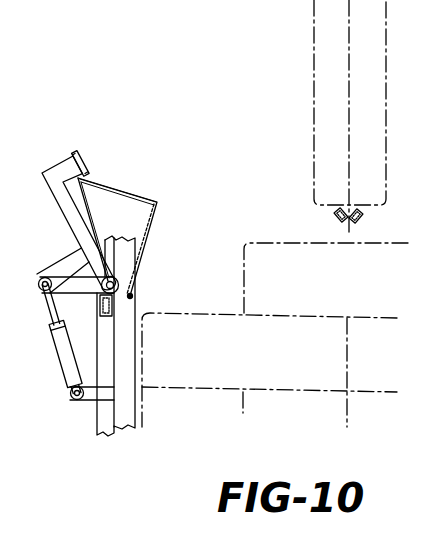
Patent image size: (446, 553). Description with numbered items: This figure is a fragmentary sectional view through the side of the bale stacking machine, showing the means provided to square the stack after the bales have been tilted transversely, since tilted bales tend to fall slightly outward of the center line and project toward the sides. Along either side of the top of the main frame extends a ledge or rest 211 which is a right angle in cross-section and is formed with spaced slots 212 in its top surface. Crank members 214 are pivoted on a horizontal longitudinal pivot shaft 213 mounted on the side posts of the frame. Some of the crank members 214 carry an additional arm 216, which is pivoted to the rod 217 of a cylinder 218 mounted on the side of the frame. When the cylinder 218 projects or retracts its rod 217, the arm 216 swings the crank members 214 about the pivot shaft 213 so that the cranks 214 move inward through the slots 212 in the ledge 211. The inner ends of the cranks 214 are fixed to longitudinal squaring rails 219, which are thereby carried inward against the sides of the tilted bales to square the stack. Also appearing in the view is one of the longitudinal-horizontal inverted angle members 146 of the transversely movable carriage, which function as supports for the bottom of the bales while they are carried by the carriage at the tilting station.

The inverted angle members 146 is at (356, 213).
The ledge or rest 211 is at (150, 230).
The spaced slots 212 is at (137, 198).
The horizontal longitudinal pivot shaft 213 is at (134, 294).
The crank members 214 is at (67, 220).
The additional arm 216 is at (73, 288).
The rod 217 is at (49, 318).
The cylinder 218 is at (61, 360).
The longitudinal squaring rails 219 is at (88, 153).